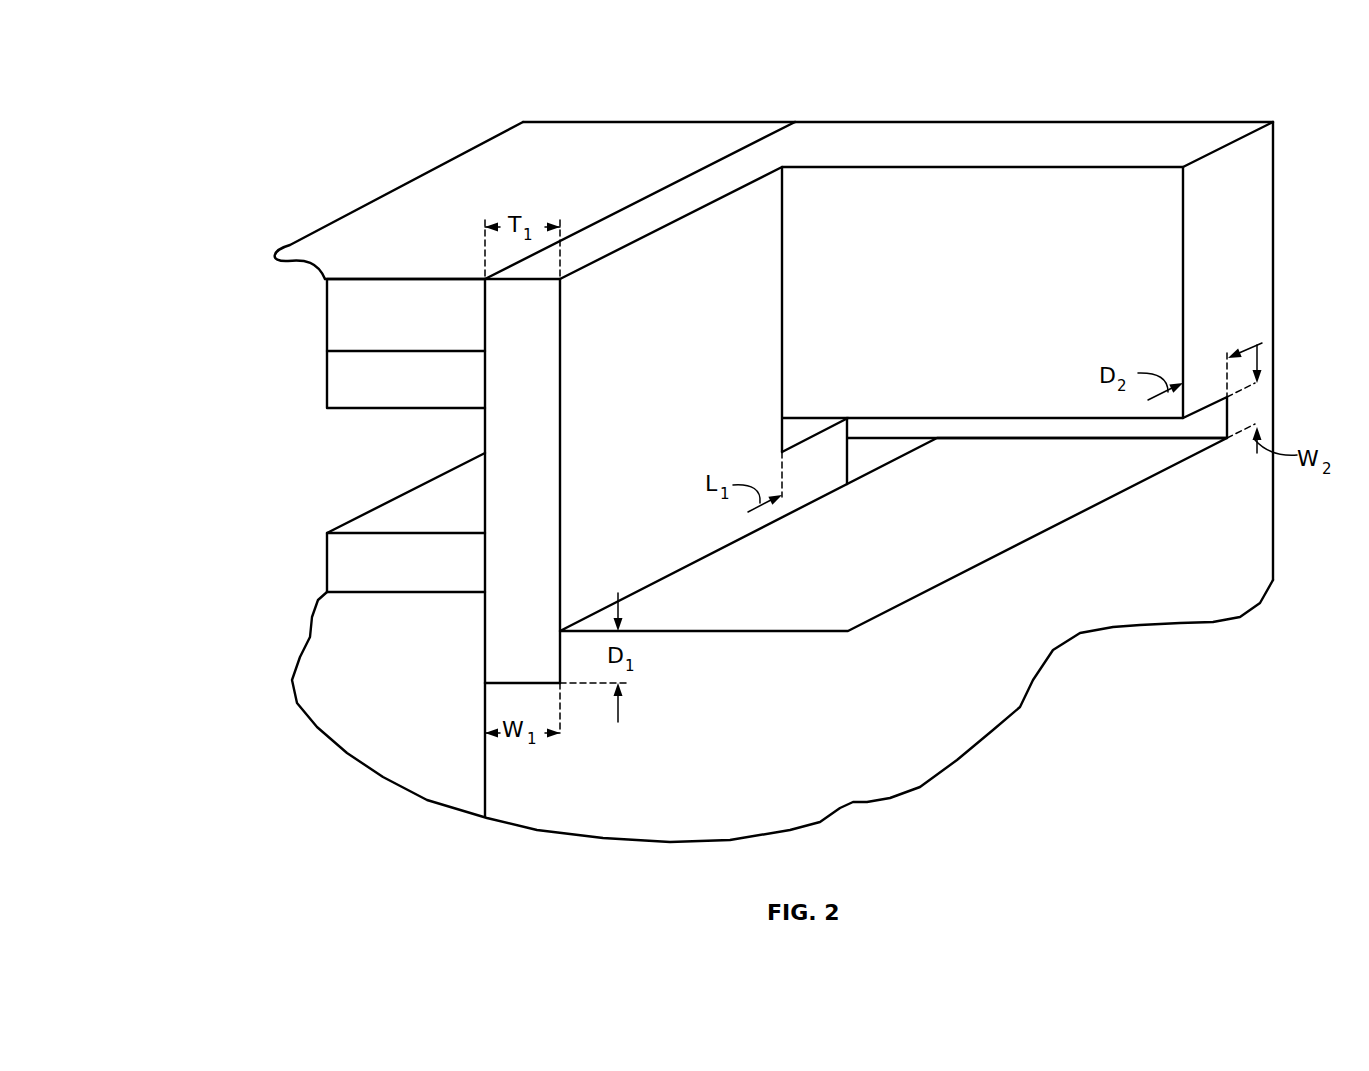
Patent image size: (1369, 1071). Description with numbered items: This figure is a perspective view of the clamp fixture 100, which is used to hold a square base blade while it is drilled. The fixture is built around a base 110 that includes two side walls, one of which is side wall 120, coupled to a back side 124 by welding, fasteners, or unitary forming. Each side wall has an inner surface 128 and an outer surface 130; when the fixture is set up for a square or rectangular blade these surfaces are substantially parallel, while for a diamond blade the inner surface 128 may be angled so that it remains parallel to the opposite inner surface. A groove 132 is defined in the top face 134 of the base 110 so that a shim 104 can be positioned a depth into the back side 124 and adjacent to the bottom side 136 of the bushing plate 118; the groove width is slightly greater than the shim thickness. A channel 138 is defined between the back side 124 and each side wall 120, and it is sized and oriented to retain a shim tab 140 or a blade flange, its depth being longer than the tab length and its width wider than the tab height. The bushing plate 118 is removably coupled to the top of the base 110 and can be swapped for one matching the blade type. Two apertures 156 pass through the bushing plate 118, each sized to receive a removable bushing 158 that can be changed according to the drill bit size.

The clamp fixture 100 is at (212, 72).
The shim 104 is at (683, 193).
The base 110 is at (1200, 101).
The bushing plate 118 is at (580, 127).
The side wall 120 is at (902, 138).
The back side 124 is at (917, 544).
The inner surface 128 is at (1005, 306).
The outer surface 130 is at (1080, 120).
The groove 132 is at (560, 766).
The top face 134 is at (485, 752).
The bottom side 136 is at (485, 617).
The channel 138 is at (1190, 425).
The shim tab 140 is at (882, 443).
The aperture 156 is at (352, 478).
The bushing 158 is at (338, 388).